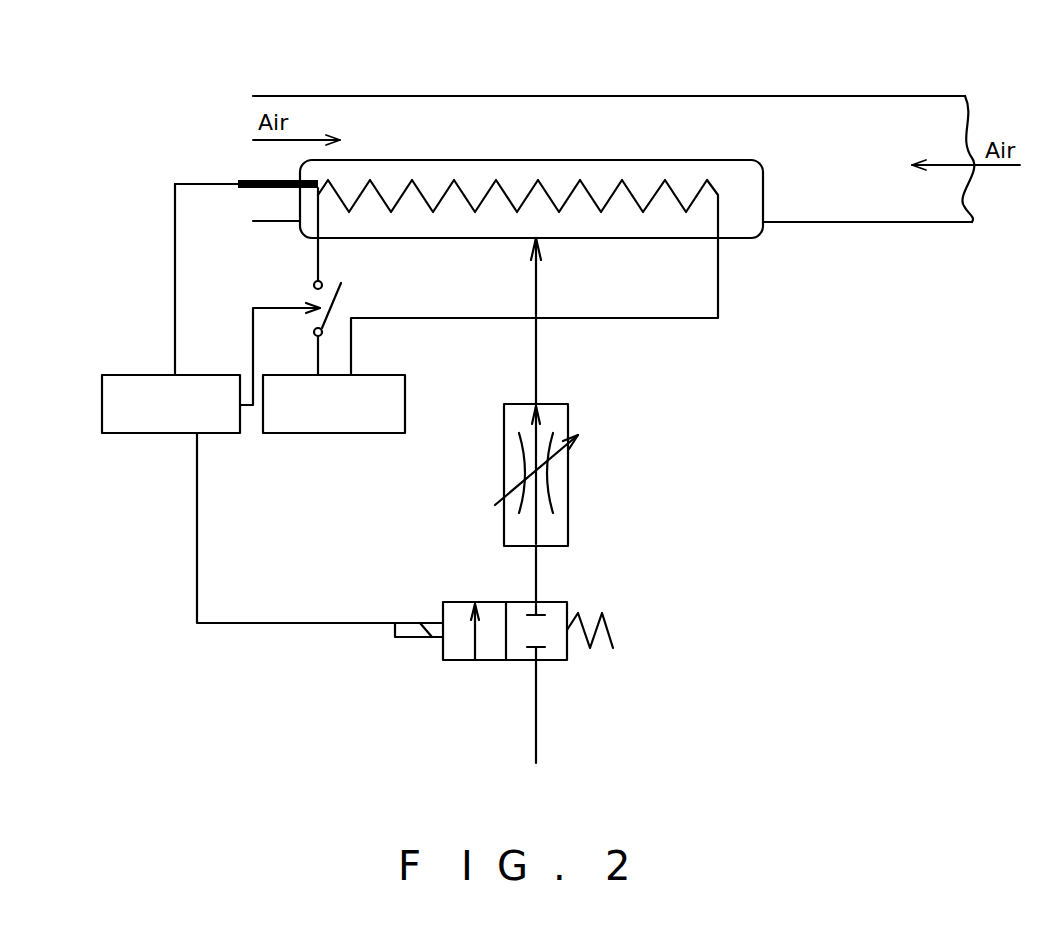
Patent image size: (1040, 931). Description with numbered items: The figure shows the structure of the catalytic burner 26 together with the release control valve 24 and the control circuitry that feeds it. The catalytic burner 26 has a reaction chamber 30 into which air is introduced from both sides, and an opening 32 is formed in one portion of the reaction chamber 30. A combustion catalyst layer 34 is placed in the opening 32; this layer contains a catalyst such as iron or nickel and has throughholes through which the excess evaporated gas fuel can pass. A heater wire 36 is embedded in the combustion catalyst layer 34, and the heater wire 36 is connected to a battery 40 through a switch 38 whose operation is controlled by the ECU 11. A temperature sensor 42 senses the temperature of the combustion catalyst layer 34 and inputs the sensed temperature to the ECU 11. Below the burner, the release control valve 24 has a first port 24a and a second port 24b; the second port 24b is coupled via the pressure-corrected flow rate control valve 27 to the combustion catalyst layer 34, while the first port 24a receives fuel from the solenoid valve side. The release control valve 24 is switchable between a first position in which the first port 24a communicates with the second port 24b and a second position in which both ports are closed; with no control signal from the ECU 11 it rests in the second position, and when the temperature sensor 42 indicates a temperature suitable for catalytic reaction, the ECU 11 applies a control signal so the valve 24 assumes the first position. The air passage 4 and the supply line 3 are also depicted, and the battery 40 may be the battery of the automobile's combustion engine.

The air supply passage 3 is at (535, 347).
The intake passage 4 is at (416, 96).
The ECU 11 is at (197, 384).
The release control valve 24 is at (560, 602).
The first port 24a is at (538, 685).
The second port 24b is at (536, 572).
The catalytic burner 26 is at (657, 60).
The pressure-corrected flow rate control valve 27 is at (569, 496).
The reaction chamber 30 is at (908, 96).
The opening 32 is at (763, 222).
The combustion catalyst layer 34 is at (735, 215).
The heater wire 36 is at (558, 190).
The switch 38 is at (332, 300).
The battery 40 is at (327, 435).
The temperature sensor 42 is at (258, 180).